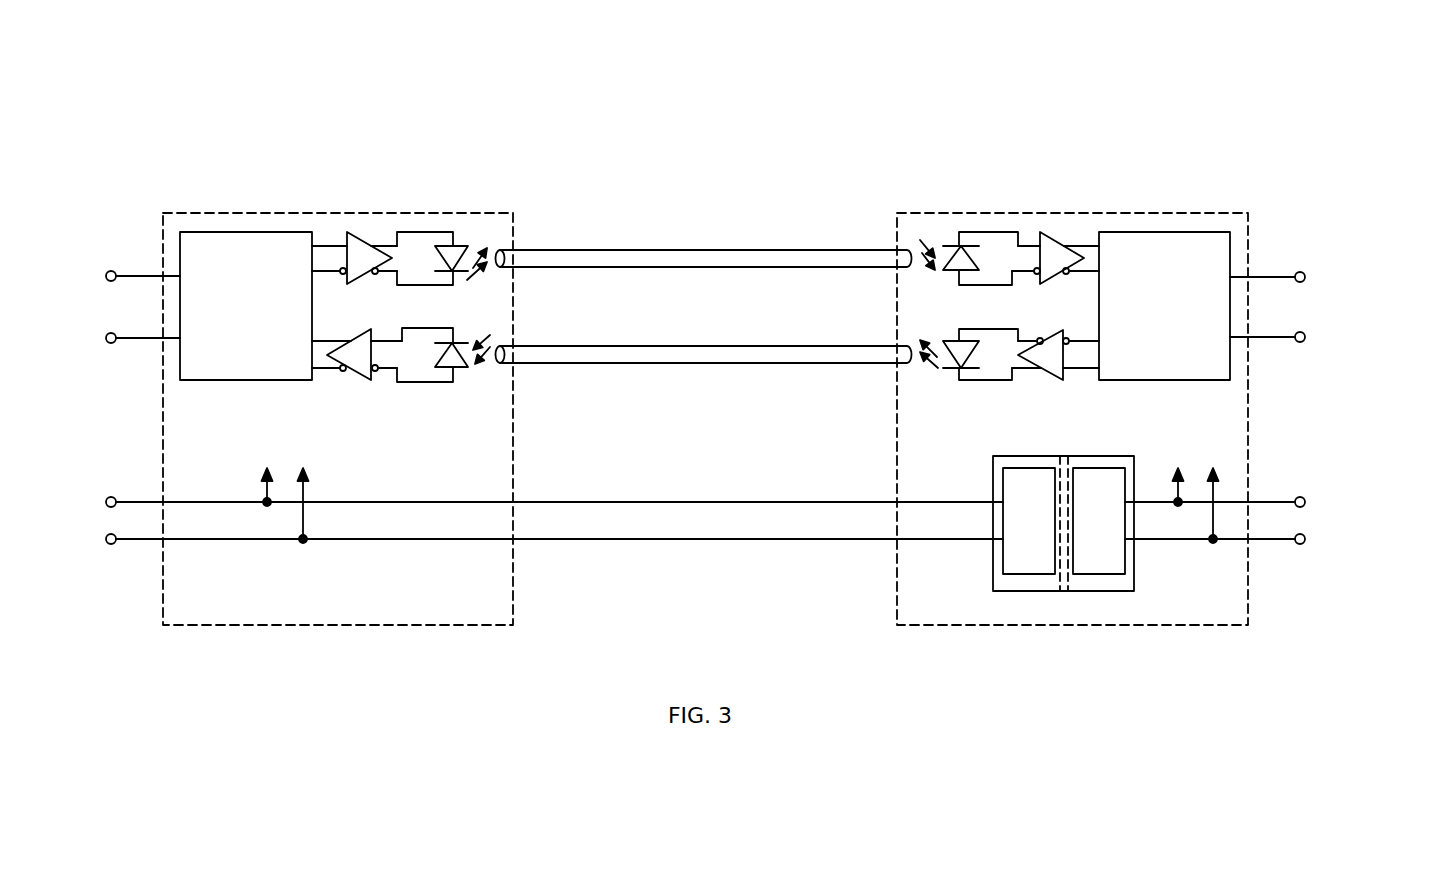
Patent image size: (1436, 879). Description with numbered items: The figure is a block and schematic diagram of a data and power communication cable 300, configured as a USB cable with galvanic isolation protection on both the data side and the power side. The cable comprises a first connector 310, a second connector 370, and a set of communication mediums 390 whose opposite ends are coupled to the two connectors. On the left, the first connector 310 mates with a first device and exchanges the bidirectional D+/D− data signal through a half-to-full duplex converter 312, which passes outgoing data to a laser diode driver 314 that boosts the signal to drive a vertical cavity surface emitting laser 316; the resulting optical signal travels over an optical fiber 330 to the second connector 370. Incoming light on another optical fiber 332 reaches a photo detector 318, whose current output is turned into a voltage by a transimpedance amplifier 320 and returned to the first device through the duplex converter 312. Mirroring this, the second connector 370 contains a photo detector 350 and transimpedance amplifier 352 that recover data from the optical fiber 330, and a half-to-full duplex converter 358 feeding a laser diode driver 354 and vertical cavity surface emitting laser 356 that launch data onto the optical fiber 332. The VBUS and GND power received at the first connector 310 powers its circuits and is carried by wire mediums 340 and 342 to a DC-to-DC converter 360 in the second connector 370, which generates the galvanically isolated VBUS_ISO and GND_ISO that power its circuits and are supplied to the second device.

The data and power communication cable 300 is at (989, 76).
The first connector 310 is at (513, 187).
The half-to-full duplex converter 312 is at (246, 306).
The laser diode driver 314 is at (358, 237).
The vertical cavity surface emitting laser 316 is at (466, 243).
The photo detector 318 is at (465, 370).
The transimpedance amplifier 320 is at (356, 377).
The optical fiber 330 is at (722, 250).
The optical fiber 332 is at (722, 363).
The wire medium 340 is at (723, 503).
The wire medium 342 is at (722, 539).
The photo detector 350 is at (943, 246).
The transimpedance amplifier 352 is at (1052, 239).
The laser diode driver 354 is at (1056, 376).
The vertical cavity surface emitting laser 356 is at (946, 370).
The half-to-full duplex converter 358 is at (1164, 306).
The DC-to-DC converter 360 is at (1090, 456).
The second connector 370 is at (1248, 187).
The set of communication mediums 390 is at (898, 625).